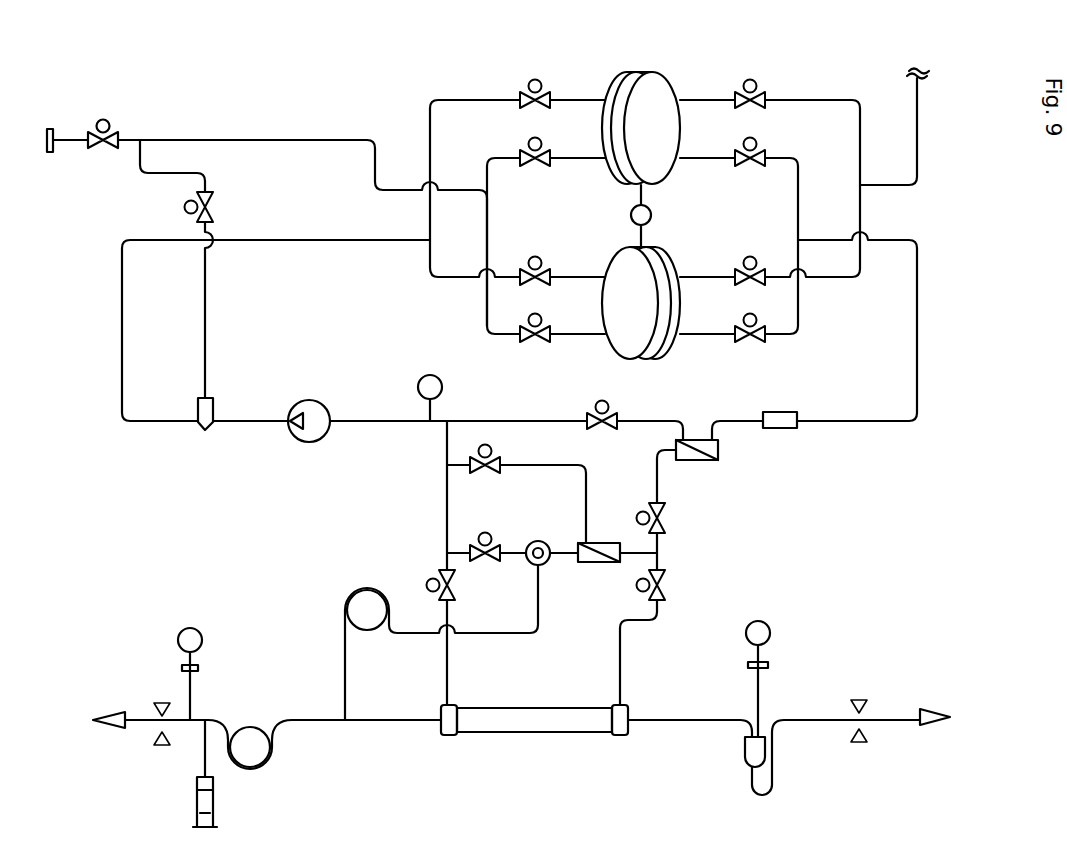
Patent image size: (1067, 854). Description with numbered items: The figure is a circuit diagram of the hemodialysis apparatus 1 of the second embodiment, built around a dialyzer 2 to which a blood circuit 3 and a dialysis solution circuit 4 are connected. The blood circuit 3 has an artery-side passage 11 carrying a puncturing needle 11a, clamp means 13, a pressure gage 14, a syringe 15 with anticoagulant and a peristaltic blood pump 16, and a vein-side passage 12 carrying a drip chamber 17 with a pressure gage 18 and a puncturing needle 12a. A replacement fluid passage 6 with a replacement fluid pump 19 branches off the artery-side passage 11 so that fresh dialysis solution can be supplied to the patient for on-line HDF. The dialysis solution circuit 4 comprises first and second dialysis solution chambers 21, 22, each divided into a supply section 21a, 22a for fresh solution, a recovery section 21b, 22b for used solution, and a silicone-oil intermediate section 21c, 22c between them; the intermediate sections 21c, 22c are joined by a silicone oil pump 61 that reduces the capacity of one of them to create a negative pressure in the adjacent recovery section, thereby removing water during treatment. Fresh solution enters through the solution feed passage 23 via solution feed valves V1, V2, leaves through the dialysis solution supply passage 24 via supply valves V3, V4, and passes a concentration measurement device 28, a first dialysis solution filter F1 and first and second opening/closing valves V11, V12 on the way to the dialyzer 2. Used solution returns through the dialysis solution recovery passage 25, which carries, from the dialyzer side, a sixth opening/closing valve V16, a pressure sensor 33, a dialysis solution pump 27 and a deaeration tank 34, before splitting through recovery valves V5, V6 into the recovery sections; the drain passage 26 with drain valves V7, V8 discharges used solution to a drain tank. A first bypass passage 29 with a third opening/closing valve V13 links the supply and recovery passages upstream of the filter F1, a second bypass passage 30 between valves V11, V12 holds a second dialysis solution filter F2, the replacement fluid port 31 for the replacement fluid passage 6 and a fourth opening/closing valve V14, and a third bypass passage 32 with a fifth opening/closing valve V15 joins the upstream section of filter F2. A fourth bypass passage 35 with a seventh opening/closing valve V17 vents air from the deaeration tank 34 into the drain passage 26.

The hemodialysis apparatus 1 is at (875, 522).
The dialyzer 2 is at (549, 734).
The blood circuit 3 is at (663, 732).
The dialysis solution circuit 4 is at (930, 360).
The replacement fluid passage 6 is at (343, 637).
The artery-side passage 11 is at (322, 723).
The puncturing needle 11a is at (112, 731).
The vein-side passage 12 is at (815, 722).
The puncturing needle 12a is at (926, 726).
The clamp means 13 is at (165, 748).
The pressure gage 14 is at (203, 641).
The syringe 15 is at (214, 806).
The blood pump 16 is at (258, 726).
The drip chamber 17 is at (745, 756).
The pressure gage 18 is at (770, 635).
The replacement fluid pump 19 is at (364, 600).
The first dialysis solution chamber 21 is at (659, 96).
The supply section 21a is at (668, 86).
The recovery section 21b is at (616, 84).
The intermediate section 21c is at (640, 72).
The second dialysis solution chamber 22 is at (647, 272).
The supply section 22a is at (668, 267).
The recovery section 22b is at (616, 275).
The intermediate section 22c is at (632, 248).
The solution feed passage 23 is at (918, 126).
The dialysis solution supply passage 24 is at (838, 423).
The dialysis solution recovery passage 25 is at (372, 424).
The drain passage 26 is at (232, 140).
The dialysis solution pump 27 is at (311, 401).
The concentration measurement device 28 is at (800, 412).
The first bypass passage 29 is at (540, 419).
The second bypass passage 30 is at (548, 590).
The replacement fluid port 31 is at (548, 548).
The third bypass passage 32 is at (560, 465).
The pressure sensor 33 is at (431, 375).
The deaeration tank 34 is at (205, 431).
The fourth bypass passage 35 is at (207, 347).
The silicone oil pump 61 is at (650, 212).
The first dialysis solution filter F1 is at (705, 462).
The second dialysis solution filter F2 is at (598, 565).
The solution feed valve V1 is at (757, 92).
The solution feed valve V2 is at (757, 266).
The supply valve V3 is at (757, 150).
The supply valve V4 is at (757, 324).
The recovery valve V5 is at (542, 92).
The recovery valve V6 is at (537, 266).
The drain valve V7 is at (542, 150).
The drain valve V8 is at (542, 327).
The first opening/closing valve V11 is at (644, 516).
The second opening/closing valve V12 is at (645, 588).
The third opening/closing valve V13 is at (609, 406).
The fourth opening/closing valve V14 is at (491, 542).
The fifth opening/closing valve V15 is at (492, 453).
The sixth opening/closing valve V16 is at (426, 583).
The seventh opening/closing valve V17 is at (190, 206).